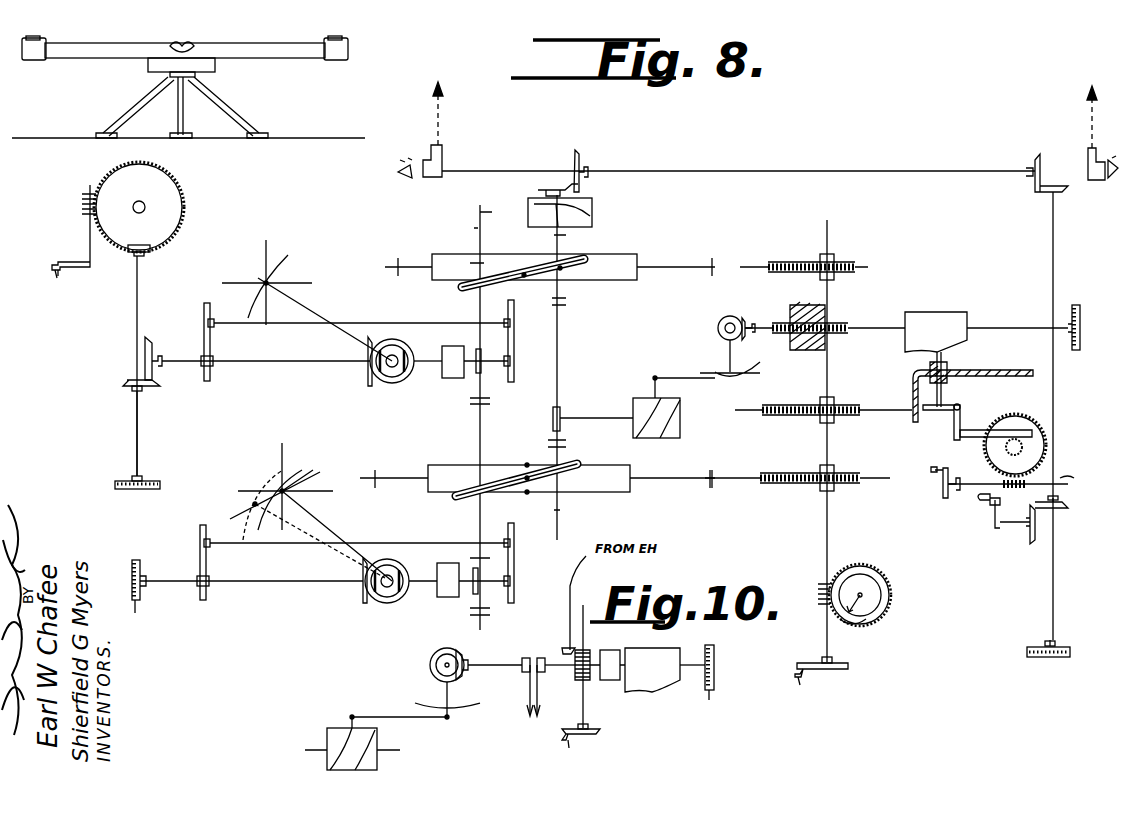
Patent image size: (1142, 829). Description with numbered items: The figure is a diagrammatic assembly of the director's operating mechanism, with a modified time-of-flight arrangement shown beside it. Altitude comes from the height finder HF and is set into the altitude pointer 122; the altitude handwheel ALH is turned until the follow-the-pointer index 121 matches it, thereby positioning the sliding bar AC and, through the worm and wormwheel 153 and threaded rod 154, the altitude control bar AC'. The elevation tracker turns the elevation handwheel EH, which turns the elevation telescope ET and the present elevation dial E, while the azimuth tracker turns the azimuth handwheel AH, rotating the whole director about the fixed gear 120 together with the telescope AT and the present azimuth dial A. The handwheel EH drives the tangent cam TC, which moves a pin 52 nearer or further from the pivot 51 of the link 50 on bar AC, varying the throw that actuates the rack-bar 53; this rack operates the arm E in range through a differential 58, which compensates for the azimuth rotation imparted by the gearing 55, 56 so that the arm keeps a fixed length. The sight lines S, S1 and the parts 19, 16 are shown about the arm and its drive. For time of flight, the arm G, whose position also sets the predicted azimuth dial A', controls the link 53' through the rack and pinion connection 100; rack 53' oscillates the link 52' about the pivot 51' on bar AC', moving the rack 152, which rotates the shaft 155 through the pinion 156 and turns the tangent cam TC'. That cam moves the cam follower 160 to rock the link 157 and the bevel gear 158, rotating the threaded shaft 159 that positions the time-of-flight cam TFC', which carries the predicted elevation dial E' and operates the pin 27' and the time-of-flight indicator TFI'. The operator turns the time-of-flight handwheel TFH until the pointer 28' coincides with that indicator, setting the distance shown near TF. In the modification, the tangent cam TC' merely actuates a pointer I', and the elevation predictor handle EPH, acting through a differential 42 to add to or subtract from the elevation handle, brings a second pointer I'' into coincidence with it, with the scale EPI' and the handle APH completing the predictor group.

In FIG. 8, the height or range finder HF is at (233, 48).
In FIG. 8, the fixed gear 120 is at (168, 188).
In FIG. 8, the azimuth handwheel AH is at (64, 283).
In FIG. 8, the gearing 55 is at (147, 370).
In FIG. 8, the dial A is at (137, 453).
In FIG. 8, the arm E is at (616, 464).
In FIG. 8, the sight line S is at (270, 236).
In FIG. 8, the sight line S1 is at (232, 274).
In FIG. 8, the gearing 56 is at (386, 363).
In FIG. 8, the bracket 19 is at (376, 382).
In FIG. 8, the hub 16 is at (393, 368).
In FIG. 8, the differential 58 is at (450, 380).
In FIG. 8, the sliding bar (altitude setting device) AC is at (550, 282).
In FIG. 8, the pivot 51 is at (523, 257).
In FIG. 8, the link 50 is at (582, 262).
In FIG. 8, the pin 52 is at (560, 289).
In FIG. 8, the rack-bar 53 is at (459, 299).
In FIG. 8, the tangent cam TC is at (575, 188).
In FIG. 8, the azimuth telescope AT is at (442, 150).
In FIG. 8, the elevation telescope ET is at (1088, 180).
In FIG. 8, the worm and wormwheel 153 is at (850, 476).
In FIG. 8, the threaded shaft 159 is at (832, 318).
In FIG. 8, the bevel gear 158 is at (731, 316).
In FIG. 8, the link 157 is at (741, 350).
In FIG. 8, the pin 27' is at (884, 396).
In FIG. 8, the threaded rod 154 is at (775, 476).
In FIG. 8, the time-of-flight cam TFC' is at (986, 332).
In FIG. 10, the time-of-flight cam TFC' is at (665, 670).
In FIG. 8, the dial E' is at (1070, 312).
In FIG. 8, the pointer 28' is at (1037, 449).
In FIG. 8, the time-of-flight indicator TFI' is at (1048, 429).
In FIG. 8, the time-of-flight handwheel TFH is at (984, 482).
In FIG. 8, the time of flight TF is at (1087, 490).
In FIG. 8, the elevation handwheel EH is at (1019, 526).
In FIG. 8, the altitude pointer 122 is at (893, 608).
In FIG. 8, the follow-the-pointer index 121 is at (858, 621).
In FIG. 8, the altitude handwheel ALH is at (819, 687).
In FIG. 8, the arm G is at (322, 498).
In FIG. 8, the azimuth prediction handle APH is at (324, 572).
In FIG. 8, the dial A' is at (131, 598).
In FIG. 8, the rack and pinion connection 100 is at (478, 590).
In FIG. 8, the altitude control bar AC' is at (537, 491).
In FIG. 8, the pivot 51' is at (516, 465).
In FIG. 8, the link 52' is at (579, 469).
In FIG. 8, the link (rack) 53' is at (454, 513).
In FIG. 8, the pinion 156 is at (553, 413).
In FIG. 8, the shaft 155 is at (578, 416).
In FIG. 8, the rack 152 is at (567, 442).
In FIG. 8, the tangent cam TC' is at (671, 418).
In FIG. 10, the tangent cam TC' is at (357, 754).
In FIG. 8, the cam follower 160 is at (650, 378).
In FIG. 10, the pointer I' is at (441, 688).
In FIG. 10, the second pointer I'' is at (554, 687).
In FIG. 10, the differential 42 is at (610, 676).
In FIG. 10, the elevation prediction indicator EPI' is at (704, 682).
In FIG. 10, the elevation predictor handle EPH is at (588, 684).